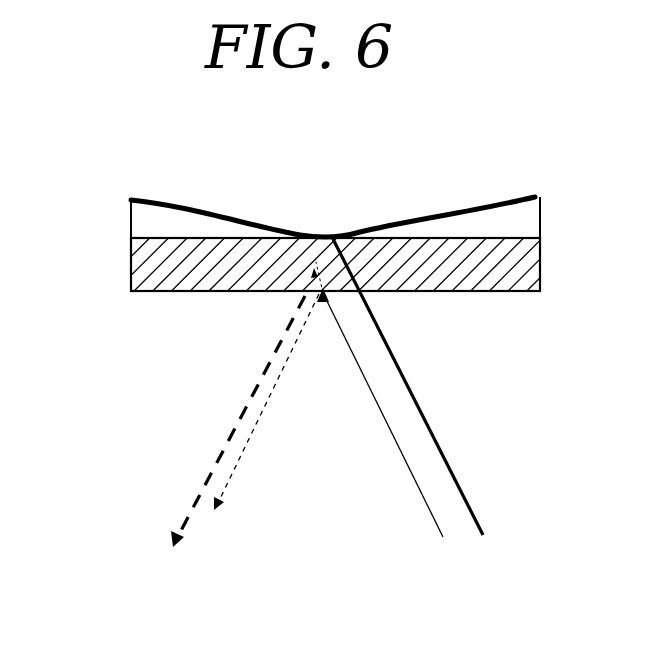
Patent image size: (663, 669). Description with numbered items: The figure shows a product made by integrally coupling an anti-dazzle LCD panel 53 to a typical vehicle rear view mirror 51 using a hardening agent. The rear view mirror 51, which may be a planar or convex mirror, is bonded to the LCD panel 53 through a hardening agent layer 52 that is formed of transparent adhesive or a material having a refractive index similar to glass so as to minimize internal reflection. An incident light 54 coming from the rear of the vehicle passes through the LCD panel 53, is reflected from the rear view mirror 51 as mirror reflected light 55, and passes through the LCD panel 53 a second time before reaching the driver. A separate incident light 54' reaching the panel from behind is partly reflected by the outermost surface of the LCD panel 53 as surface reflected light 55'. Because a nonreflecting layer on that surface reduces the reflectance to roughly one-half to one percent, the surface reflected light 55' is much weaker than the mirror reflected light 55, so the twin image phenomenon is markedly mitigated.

The rear view mirror 51 is at (321, 195).
The hardening agent layer 52 is at (128, 218).
The anti-dazzle LCD panel 53 is at (128, 268).
The incident light 54 is at (434, 385).
The incident light 54' is at (428, 399).
The mirror reflected light 55 is at (212, 421).
The surface reflected light 55' is at (218, 402).